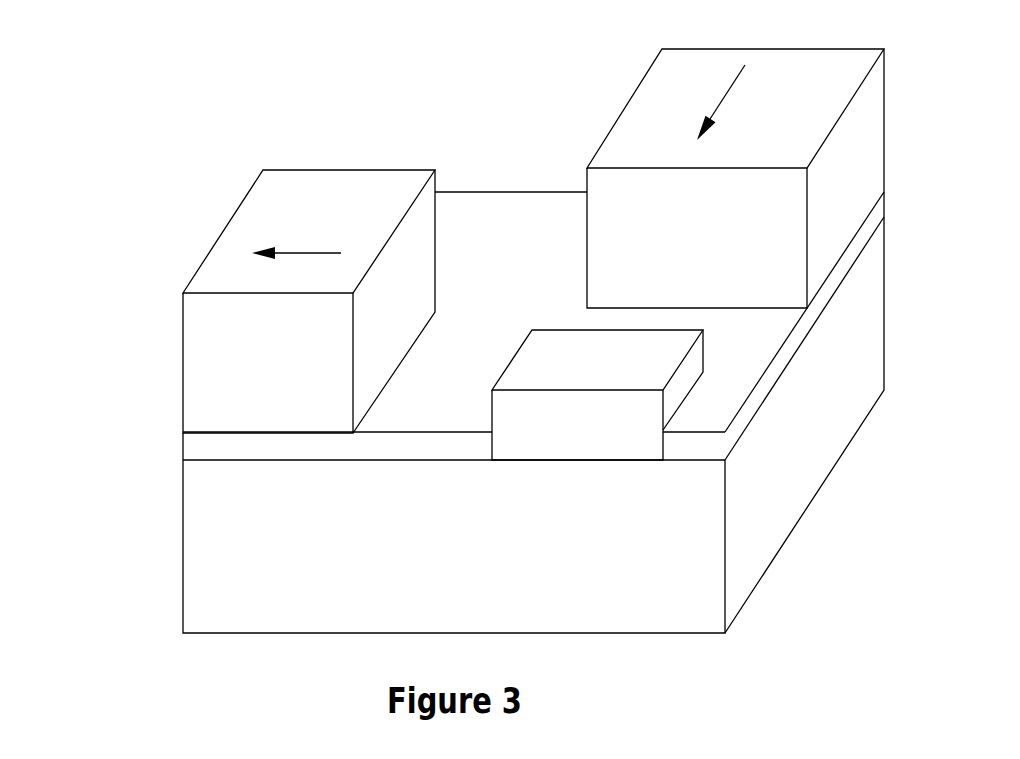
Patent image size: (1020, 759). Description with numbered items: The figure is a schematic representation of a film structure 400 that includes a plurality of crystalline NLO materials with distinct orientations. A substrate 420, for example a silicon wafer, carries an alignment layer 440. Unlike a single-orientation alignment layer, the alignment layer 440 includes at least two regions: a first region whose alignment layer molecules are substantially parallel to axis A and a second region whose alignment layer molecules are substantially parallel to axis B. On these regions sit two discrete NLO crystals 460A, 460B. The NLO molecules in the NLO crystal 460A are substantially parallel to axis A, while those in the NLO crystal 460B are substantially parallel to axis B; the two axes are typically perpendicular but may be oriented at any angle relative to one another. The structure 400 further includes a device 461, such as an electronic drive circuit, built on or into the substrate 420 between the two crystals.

The structure 400 is at (182, 100).
The substrate 420 is at (170, 552).
The alignment layer 440 is at (170, 442).
The NLO crystal 460A is at (170, 372).
The NLO crystal 460B is at (644, 68).
The device 461 is at (538, 296).